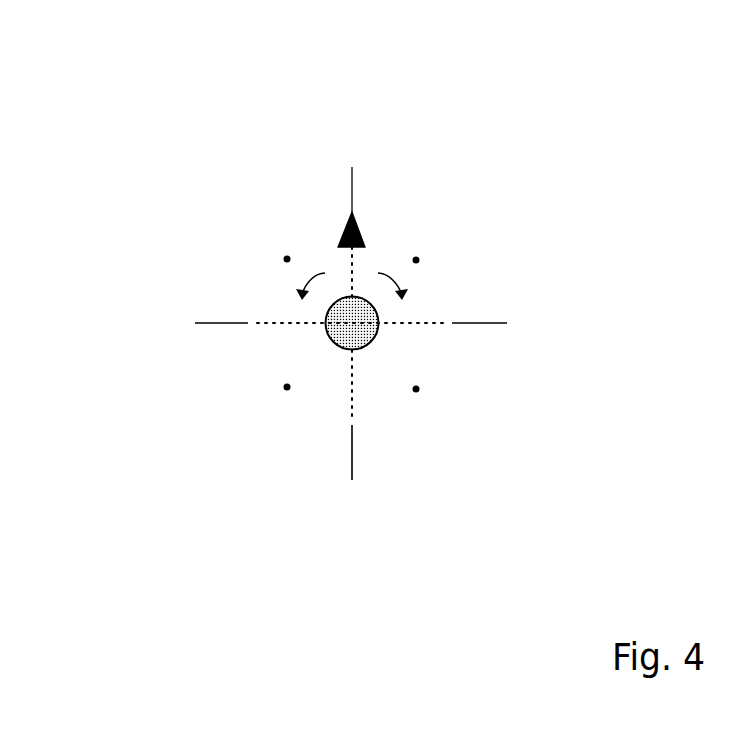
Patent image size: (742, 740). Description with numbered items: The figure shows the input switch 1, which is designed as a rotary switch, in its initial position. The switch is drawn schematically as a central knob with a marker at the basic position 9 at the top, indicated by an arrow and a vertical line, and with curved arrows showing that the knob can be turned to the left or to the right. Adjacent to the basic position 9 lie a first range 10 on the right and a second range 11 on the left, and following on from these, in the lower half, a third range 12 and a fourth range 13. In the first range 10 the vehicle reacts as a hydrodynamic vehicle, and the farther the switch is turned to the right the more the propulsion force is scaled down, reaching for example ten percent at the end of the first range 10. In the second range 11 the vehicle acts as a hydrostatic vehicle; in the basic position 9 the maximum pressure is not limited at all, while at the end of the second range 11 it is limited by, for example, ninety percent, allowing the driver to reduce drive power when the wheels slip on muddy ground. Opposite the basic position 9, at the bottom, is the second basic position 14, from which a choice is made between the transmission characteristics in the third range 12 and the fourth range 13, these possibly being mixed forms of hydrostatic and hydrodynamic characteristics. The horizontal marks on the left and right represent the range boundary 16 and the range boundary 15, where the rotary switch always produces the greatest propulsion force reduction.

The input switch 1 is at (515, 157).
The basic position 9 is at (352, 193).
The first range 10 is at (416, 260).
The second range 11 is at (287, 259).
The third range 12 is at (416, 389).
The fourth range 13 is at (287, 387).
The second basic position 14 is at (352, 455).
The range boundary 15 is at (482, 322).
The range boundary 16 is at (222, 322).